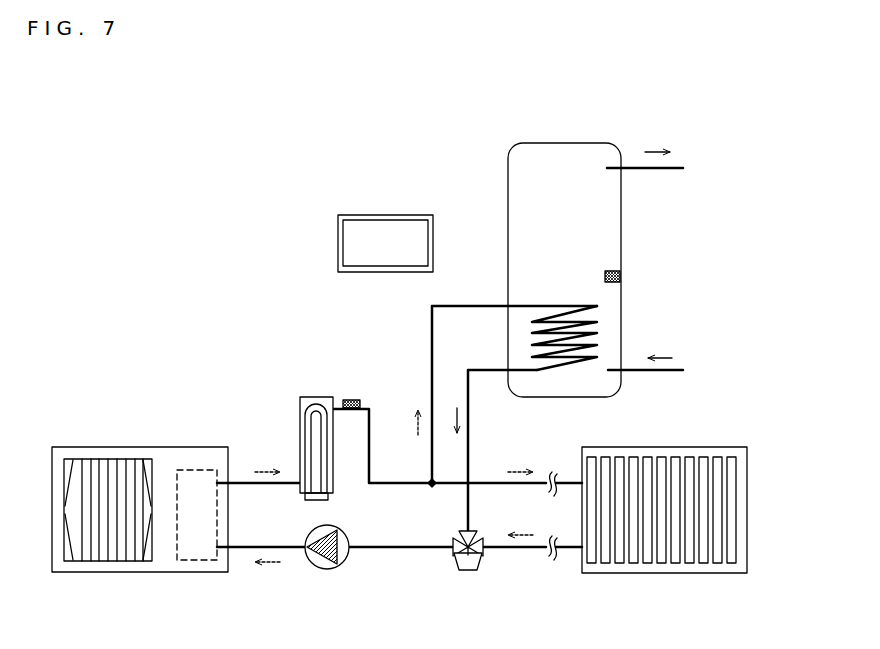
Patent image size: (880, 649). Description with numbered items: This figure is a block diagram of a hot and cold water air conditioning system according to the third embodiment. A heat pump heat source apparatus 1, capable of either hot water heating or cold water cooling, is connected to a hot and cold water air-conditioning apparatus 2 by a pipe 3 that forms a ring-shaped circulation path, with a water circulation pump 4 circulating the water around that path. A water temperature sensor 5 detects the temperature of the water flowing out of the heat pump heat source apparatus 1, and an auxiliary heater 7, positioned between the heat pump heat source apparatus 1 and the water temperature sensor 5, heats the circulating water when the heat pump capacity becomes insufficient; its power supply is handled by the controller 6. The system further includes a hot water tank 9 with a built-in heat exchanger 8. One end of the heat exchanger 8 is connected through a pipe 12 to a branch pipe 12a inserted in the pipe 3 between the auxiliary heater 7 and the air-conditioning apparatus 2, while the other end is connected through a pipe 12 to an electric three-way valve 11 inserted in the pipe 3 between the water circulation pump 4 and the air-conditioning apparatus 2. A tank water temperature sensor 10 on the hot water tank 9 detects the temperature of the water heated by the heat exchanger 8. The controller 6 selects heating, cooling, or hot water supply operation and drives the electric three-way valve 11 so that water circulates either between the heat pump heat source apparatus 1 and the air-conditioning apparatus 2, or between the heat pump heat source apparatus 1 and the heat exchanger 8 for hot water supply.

The heat pump heat source apparatus 1 is at (152, 447).
The hot and cold water air-conditioning apparatus 2 is at (663, 446).
The pipe 3 is at (381, 482).
The water circulation pump 4 is at (335, 570).
The water temperature sensor 5 is at (352, 400).
The controller 6 is at (400, 215).
The auxiliary heater 7 is at (320, 397).
The heat exchanger 8 is at (558, 306).
The hot water tank 9 is at (570, 143).
The tank water temperature sensor 10 is at (620, 276).
The electric three-way valve 11 is at (480, 570).
The pipe 12 is at (481, 306).
The branch pipe 12a is at (433, 487).